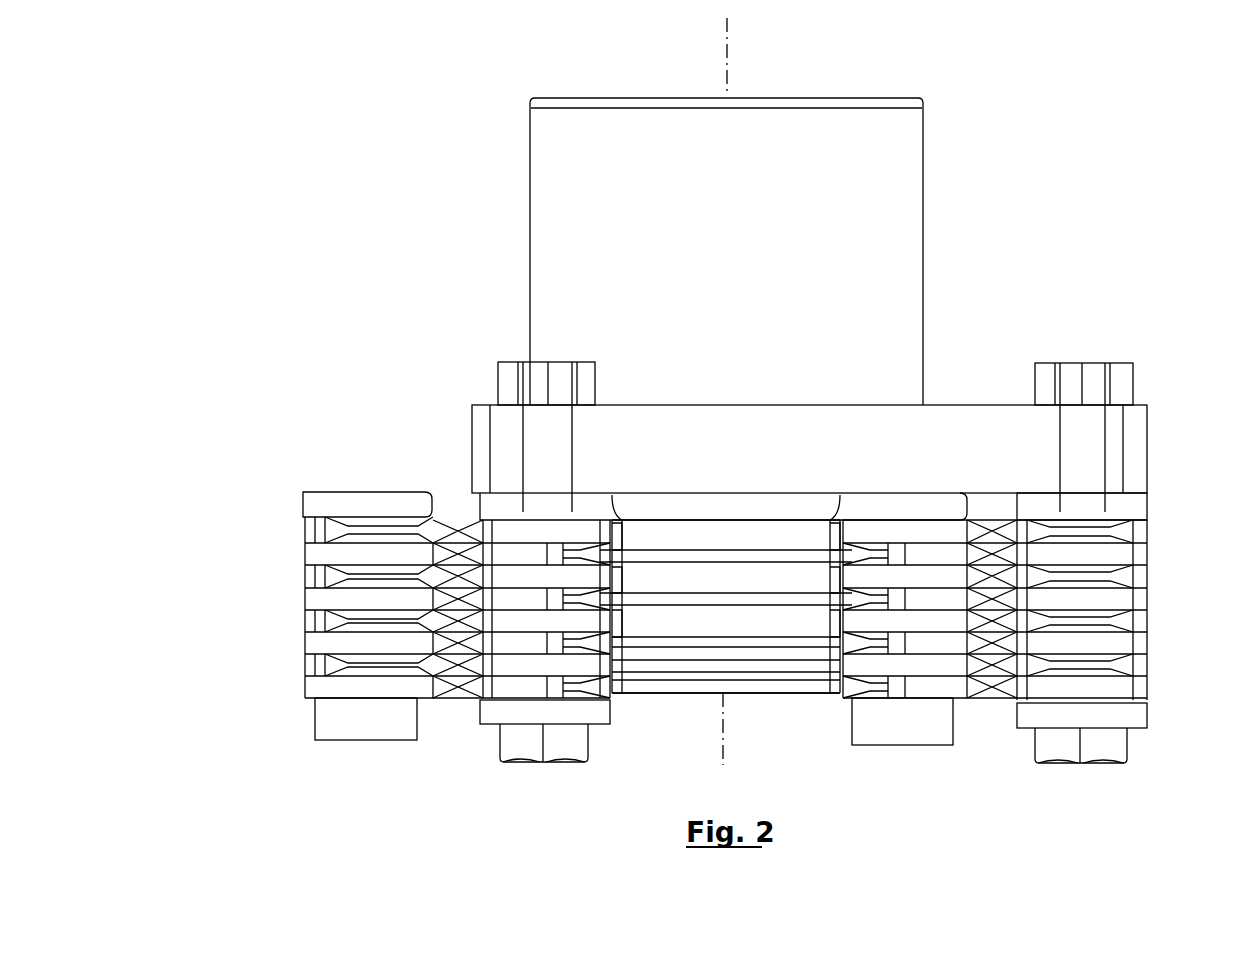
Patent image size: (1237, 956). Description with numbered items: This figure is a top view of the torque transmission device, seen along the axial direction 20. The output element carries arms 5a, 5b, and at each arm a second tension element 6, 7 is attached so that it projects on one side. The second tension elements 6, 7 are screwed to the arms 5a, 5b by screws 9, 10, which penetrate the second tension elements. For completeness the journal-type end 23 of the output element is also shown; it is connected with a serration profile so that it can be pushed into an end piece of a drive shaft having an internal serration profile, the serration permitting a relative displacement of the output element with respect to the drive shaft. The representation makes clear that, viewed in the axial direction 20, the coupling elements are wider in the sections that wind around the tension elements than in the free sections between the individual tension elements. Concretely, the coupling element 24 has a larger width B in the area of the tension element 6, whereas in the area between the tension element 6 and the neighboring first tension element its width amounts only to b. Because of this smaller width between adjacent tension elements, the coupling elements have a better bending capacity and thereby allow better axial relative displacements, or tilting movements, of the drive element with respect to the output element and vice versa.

The axial direction 20 is at (732, 37).
The journal-type end 23 is at (945, 225).
The arm 5a is at (483, 440).
The arm 5b is at (1136, 452).
The second tension element 6 is at (497, 503).
The second tension element 7 is at (1092, 582).
The screw 9 is at (570, 744).
The screw 10 is at (1105, 752).
The coupling element 24 is at (690, 690).
The width B is at (305, 672).
The width b is at (760, 648).